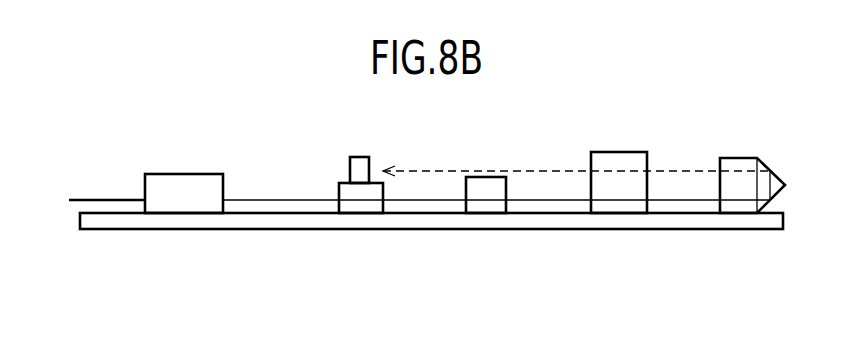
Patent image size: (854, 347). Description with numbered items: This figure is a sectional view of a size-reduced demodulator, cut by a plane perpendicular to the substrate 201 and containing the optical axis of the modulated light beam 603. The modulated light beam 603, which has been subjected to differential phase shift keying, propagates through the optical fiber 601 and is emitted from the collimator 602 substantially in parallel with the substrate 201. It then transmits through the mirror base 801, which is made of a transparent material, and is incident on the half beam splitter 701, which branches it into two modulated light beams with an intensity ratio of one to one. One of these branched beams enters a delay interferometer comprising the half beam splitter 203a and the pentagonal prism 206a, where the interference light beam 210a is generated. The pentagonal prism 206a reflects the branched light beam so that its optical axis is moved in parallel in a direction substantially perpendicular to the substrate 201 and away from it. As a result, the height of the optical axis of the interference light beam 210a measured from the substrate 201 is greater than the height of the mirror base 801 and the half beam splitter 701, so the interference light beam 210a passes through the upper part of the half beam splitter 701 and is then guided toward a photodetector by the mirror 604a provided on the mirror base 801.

The substrate 201 is at (143, 231).
The optical fiber 601 is at (110, 197).
The collimator 602 is at (188, 172).
The modulated light beam 603 is at (269, 197).
The mirror 604a is at (361, 156).
The mirror base 801 is at (387, 207).
The half beam splitter 701 is at (511, 207).
The interference light beam 210a is at (444, 171).
The half beam splitter 203a is at (650, 213).
The pentagonal prism 206a is at (740, 157).